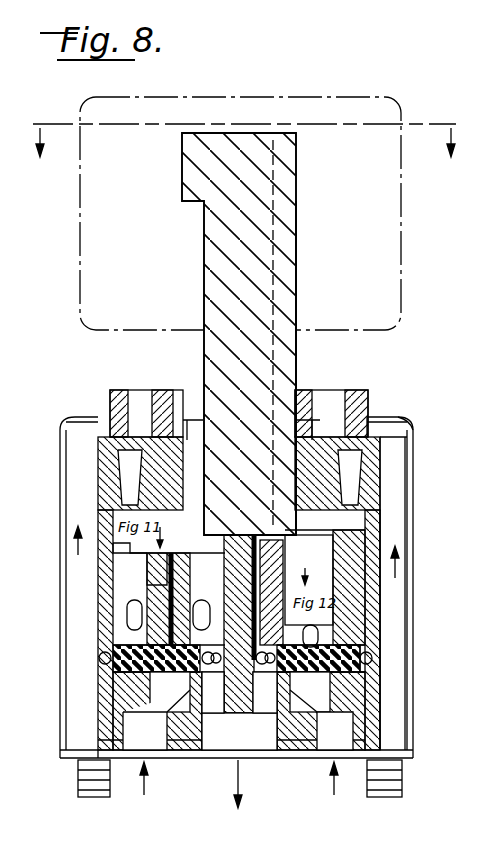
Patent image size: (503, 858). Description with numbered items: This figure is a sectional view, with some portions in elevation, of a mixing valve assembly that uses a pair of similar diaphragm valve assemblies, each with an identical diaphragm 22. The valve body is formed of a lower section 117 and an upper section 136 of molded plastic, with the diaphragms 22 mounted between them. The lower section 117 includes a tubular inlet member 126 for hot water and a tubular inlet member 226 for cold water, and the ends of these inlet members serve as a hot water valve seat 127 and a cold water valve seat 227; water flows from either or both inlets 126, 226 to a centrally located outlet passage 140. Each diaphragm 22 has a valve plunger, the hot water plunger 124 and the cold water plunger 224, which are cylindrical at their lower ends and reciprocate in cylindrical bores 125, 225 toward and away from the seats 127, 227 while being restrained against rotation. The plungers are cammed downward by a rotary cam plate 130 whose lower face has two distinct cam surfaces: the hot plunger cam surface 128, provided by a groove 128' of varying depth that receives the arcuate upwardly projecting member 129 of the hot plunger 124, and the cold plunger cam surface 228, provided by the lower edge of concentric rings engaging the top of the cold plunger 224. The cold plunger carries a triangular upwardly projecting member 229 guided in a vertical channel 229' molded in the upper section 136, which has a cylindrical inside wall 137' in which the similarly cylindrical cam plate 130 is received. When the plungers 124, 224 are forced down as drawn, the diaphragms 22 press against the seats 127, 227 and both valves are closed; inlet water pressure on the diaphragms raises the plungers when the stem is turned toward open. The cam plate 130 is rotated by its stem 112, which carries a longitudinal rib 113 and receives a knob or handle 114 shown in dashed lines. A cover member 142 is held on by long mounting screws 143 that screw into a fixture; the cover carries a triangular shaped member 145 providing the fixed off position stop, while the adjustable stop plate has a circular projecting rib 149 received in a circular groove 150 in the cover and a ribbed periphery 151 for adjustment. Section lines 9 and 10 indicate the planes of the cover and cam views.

The section line 9- 9 is at (245, 126).
The section line 10- 10 is at (232, 570).
The diaphragm 22 is at (120, 680).
The stem 112 is at (268, 243).
The longitudinal rib 113 is at (290, 313).
The operating knob or handle 114 is at (403, 230).
The lower section 117 is at (365, 756).
The hot water plunger 124 is at (110, 655).
The cylindrical bore 125 is at (120, 622).
The hot water inlet member 126 is at (130, 700).
The hot water valve seat 127 is at (156, 711).
The hot plunger cam surface 128 is at (242, 541).
The cam groove 128' is at (417, 630).
The upwardly projecting member 129 is at (170, 553).
The rotary cam plate 130 is at (100, 522).
The upper section 136 is at (380, 628).
The guide member 137' is at (401, 587).
The outlet passage 140 is at (231, 742).
The cover member 142 is at (366, 442).
The mounting screws 143 is at (80, 790).
The triangular shaped member 145 is at (303, 424).
The circular projecting rib 149 is at (328, 437).
The circular groove 150 is at (368, 472).
The ribbed periphery 151 is at (112, 392).
The cold water plunger 224 is at (319, 631).
The cylindrical bore 225 is at (365, 675).
The cold water inlet member 226 is at (360, 735).
The cold water valve seat 227 is at (321, 711).
The cold plunger cam surface 228 is at (309, 580).
The upwardly projecting member 229 is at (370, 658).
The vertical channel 229' is at (377, 573).